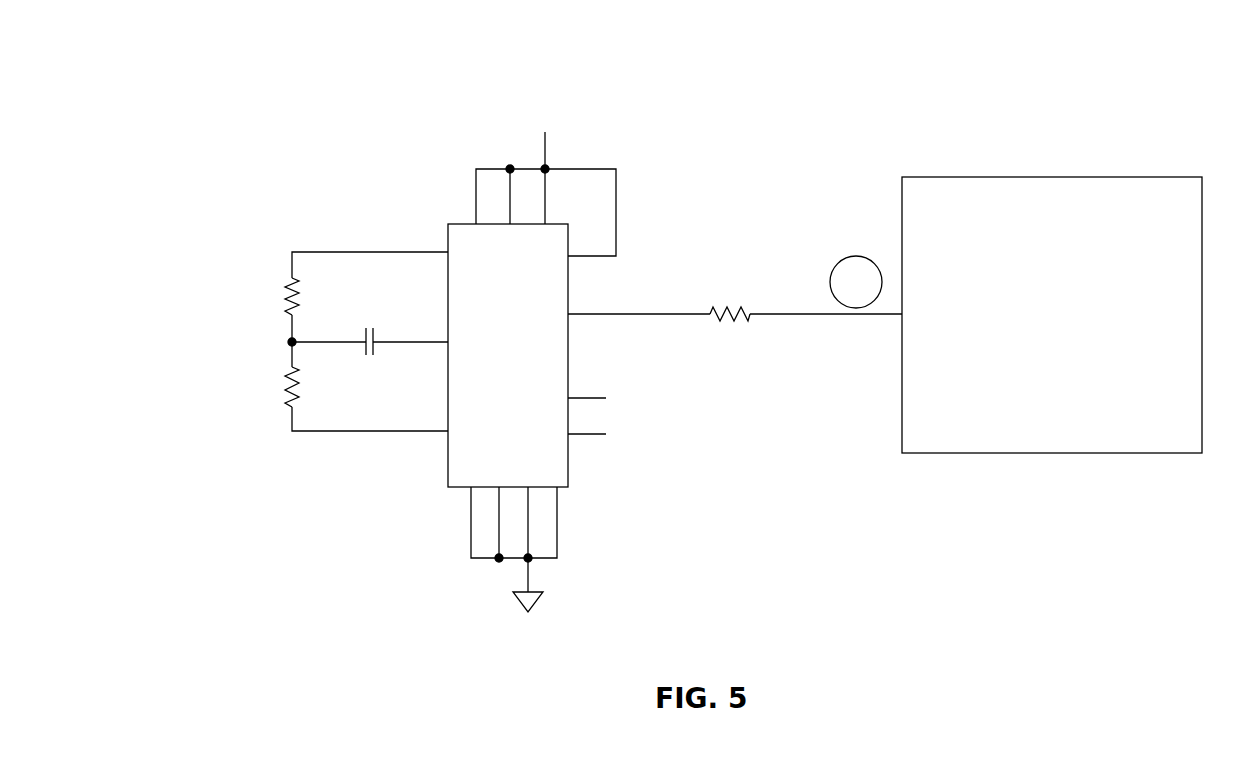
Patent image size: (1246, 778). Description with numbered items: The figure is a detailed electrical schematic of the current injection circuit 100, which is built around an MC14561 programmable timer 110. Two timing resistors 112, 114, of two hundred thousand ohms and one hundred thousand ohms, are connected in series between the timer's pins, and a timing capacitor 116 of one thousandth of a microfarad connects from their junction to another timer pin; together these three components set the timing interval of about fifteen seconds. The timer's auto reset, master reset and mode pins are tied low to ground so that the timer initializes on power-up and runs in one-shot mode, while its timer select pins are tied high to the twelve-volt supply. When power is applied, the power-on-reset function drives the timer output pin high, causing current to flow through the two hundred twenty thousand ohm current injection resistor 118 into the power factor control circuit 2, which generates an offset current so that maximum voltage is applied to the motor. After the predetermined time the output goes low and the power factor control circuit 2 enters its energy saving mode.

The current injection circuit 100 is at (205, 56).
The programmable timer 110 is at (447, 458).
The timing resistor 112 is at (288, 282).
The timing resistor 114 is at (288, 407).
The timing capacitor 116 is at (375, 345).
The current injection resistor 118 is at (715, 318).
The power factor control circuit 2 is at (938, 177).